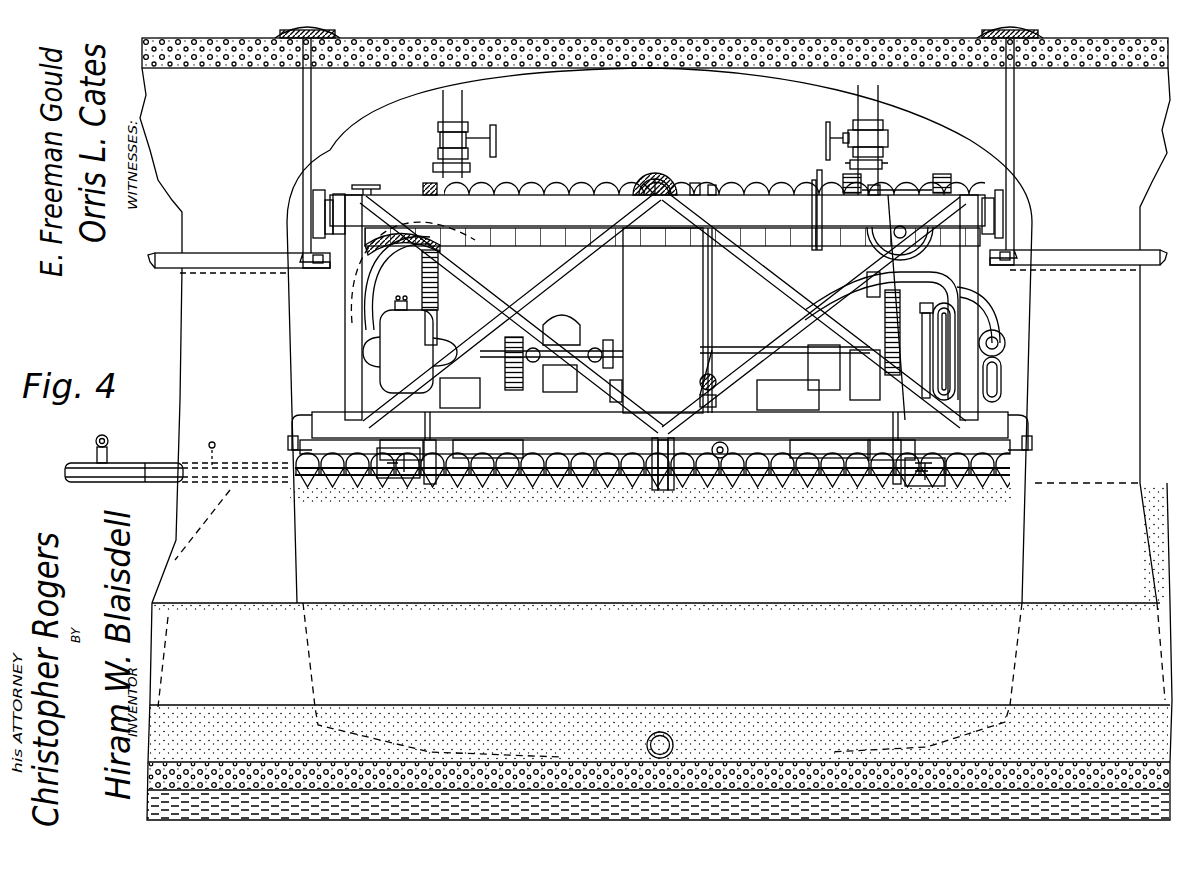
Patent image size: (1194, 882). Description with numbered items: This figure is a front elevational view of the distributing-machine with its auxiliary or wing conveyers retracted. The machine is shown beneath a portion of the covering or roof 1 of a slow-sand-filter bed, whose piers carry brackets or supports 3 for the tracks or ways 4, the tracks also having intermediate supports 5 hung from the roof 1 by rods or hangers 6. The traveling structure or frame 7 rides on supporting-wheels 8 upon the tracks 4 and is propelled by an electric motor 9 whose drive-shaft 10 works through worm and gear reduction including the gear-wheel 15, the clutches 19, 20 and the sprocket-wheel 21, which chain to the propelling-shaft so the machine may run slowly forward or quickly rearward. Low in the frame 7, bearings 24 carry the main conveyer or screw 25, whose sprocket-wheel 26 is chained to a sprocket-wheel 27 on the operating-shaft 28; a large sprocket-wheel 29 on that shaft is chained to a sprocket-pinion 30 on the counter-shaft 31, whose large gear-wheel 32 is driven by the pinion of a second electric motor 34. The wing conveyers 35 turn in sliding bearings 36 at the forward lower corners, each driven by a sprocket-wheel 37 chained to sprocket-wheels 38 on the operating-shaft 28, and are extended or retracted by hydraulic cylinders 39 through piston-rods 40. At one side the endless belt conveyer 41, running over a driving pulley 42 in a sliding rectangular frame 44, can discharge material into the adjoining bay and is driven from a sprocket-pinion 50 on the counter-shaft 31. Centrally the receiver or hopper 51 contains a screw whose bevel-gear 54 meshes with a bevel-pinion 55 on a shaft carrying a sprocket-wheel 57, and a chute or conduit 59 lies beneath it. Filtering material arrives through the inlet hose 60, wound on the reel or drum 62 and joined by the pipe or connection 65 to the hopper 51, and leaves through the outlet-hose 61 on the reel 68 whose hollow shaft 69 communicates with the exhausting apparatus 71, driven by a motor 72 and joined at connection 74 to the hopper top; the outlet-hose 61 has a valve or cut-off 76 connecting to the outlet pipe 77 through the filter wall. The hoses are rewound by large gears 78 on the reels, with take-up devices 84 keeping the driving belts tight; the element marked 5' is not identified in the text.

The covering or roof 1 is at (656, 429).
The brackets or supports 3 is at (160, 270).
The tracks or ways 4 is at (330, 270).
The intermediate supports 5 is at (657, 252).
The rods or hangers 6 is at (302, 153).
The traveling structure or frame 7 is at (660, 316).
The supporting-wheels 8 is at (320, 193).
The electric motor 9 is at (928, 280).
The drive-shaft 10 is at (908, 232).
The gear-wheel 15 is at (945, 178).
The clutch 19 is at (862, 185).
The clutch 20 is at (874, 190).
The sprocket-wheel 21 is at (829, 141).
The bearings 24 is at (300, 422).
The main conveyer or screw 25 is at (585, 490).
The sprocket-wheel 26 is at (665, 492).
The sprocket-wheel 27 is at (665, 402).
The operating-shaft 28 is at (464, 404).
The large sprocket-wheel 29 is at (622, 395).
The sprocket-pinion 30 is at (612, 350).
The counter-shaft 31 is at (564, 370).
The large gear-wheel 32 is at (520, 380).
The electric motor 34 is at (561, 330).
The auxiliary or wing conveyers 35 is at (320, 490).
The sliding or reciprocating bearings 36 is at (405, 488).
The sprocket-wheel 37 is at (435, 488).
The sprocket-wheels 38 is at (430, 415).
The hydraulic cylinders 39 is at (655, 449).
The piston-rods 40 is at (432, 455).
The endless belt conveyer 41 is at (170, 462).
The driving pulley 42 is at (727, 448).
The rectangular frame 44 is at (165, 482).
The sprocket-pinion 50 is at (712, 360).
The receiver or hopper 51 is at (820, 313).
The bevel-gear 54 is at (672, 172).
The bevel-pinion 55 is at (700, 185).
The sprocket-wheel 57 is at (725, 192).
The chute or conduit 59 is at (667, 320).
The inlet hose 60 is at (704, 142).
The outlet-hose 61 is at (796, 201).
The reel or drum 62 is at (440, 248).
The pipe or connection 65 is at (372, 242).
The reel 68 is at (880, 297).
The hollow shaft 69 is at (915, 313).
The exhausting apparatus 71 is at (944, 351).
The motor or driving device 72 is at (410, 344).
The connection 74 is at (997, 330).
The valve or cut-off 76 is at (880, 137).
The outlet pipe or conduit 77 is at (876, 110).
The large gears 78 is at (422, 282).
The take-up devices 84 is at (366, 186).
The diagonal brace 5' is at (504, 313).